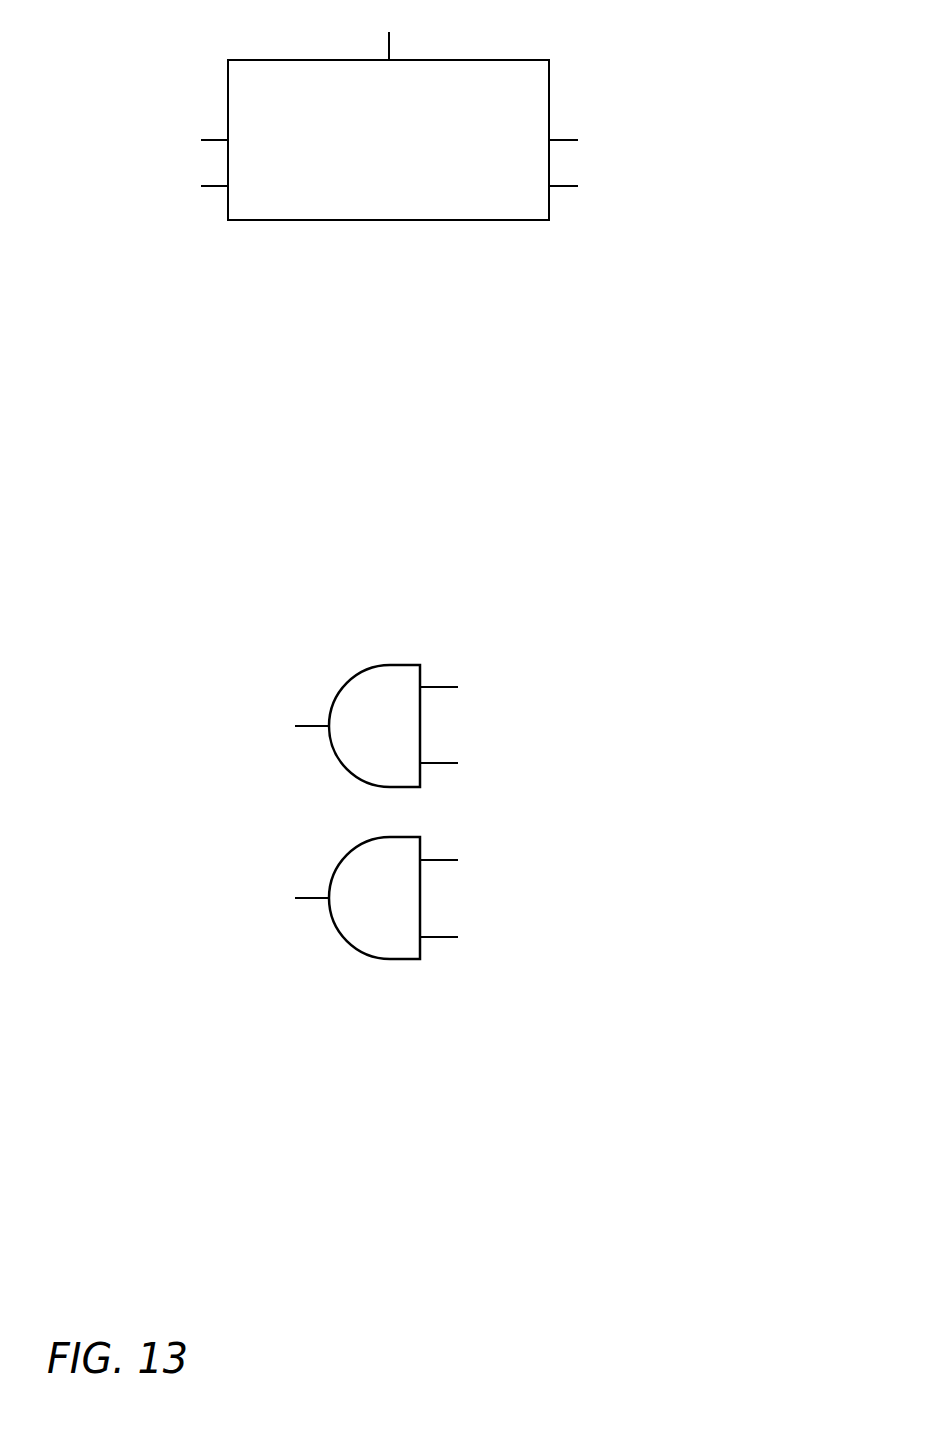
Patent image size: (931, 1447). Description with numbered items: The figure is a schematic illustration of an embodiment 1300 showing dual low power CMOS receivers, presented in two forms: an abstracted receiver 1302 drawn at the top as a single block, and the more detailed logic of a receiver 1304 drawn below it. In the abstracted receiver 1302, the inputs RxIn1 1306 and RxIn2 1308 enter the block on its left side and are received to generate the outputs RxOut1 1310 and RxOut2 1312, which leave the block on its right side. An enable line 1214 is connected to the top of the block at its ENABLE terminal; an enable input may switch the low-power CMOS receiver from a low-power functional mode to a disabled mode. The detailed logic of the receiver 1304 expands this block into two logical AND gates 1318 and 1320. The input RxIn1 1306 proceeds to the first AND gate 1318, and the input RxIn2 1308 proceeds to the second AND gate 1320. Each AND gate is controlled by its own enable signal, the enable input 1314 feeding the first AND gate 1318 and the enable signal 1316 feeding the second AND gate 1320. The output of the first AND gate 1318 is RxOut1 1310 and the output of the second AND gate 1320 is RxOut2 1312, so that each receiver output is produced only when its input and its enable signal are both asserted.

The enable signal line 1214 is at (391, 30).
The embodiment 1300 is at (500, 663).
The abstracted receiver 1302 is at (493, 472).
The receiver 1304 is at (593, 812).
The RxIn1 input 1306 is at (590, 700).
The RxIn2 input 1308 is at (590, 872).
The RxOut1 output 1310 is at (225, 769).
The RxOut2 output 1312 is at (225, 943).
The enable input 1314 is at (610, 775).
The enable signal 1316 is at (610, 949).
The logical AND gate 1318 is at (383, 663).
The logical AND gate 1320 is at (390, 963).